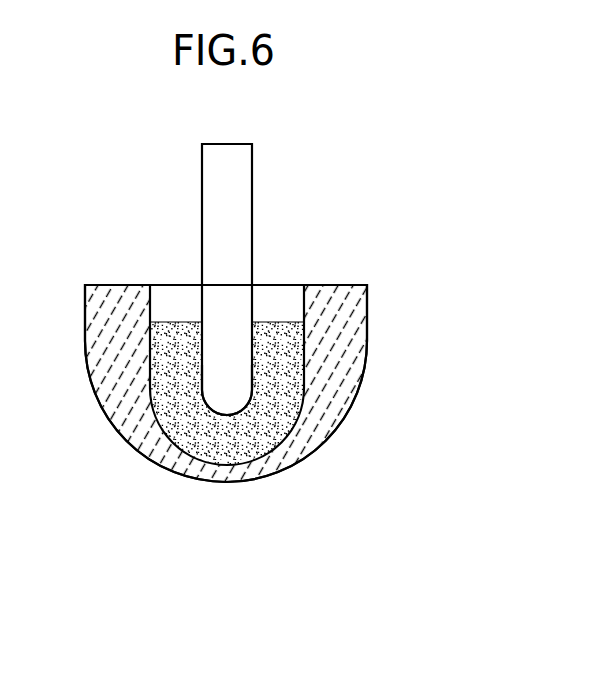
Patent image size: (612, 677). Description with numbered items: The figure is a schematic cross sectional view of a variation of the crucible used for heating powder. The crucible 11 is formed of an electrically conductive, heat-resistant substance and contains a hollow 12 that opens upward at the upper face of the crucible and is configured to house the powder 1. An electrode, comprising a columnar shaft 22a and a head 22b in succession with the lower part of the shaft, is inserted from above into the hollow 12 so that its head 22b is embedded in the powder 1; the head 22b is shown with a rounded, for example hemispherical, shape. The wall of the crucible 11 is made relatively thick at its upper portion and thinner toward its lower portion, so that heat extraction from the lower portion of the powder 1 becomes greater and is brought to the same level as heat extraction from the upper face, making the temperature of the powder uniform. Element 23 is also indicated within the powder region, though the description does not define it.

The powder 1 is at (193, 435).
The crucible 11 is at (108, 303).
The hollow 12 is at (152, 352).
The columnar shaft 22a is at (237, 182).
The head 22b is at (232, 393).
The powder material 23 is at (248, 410).